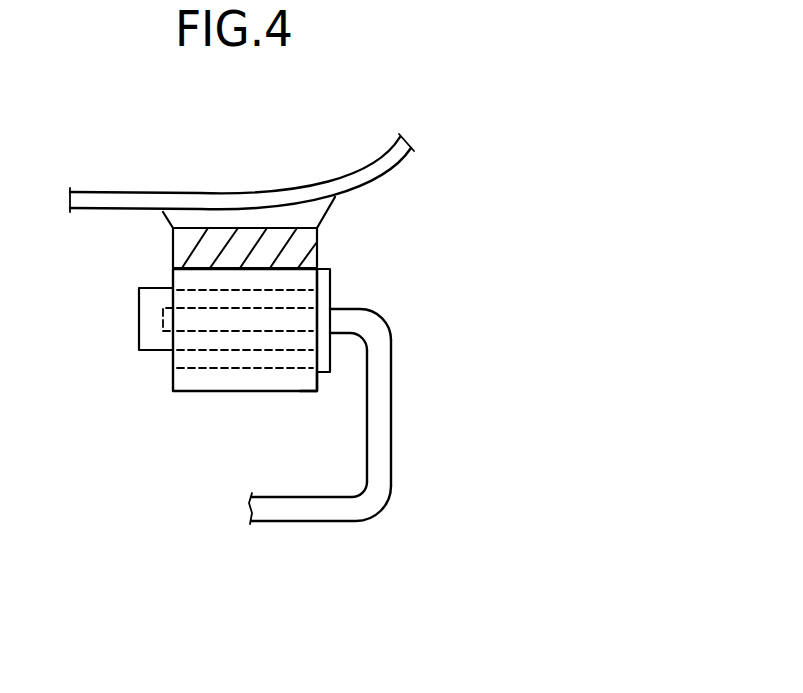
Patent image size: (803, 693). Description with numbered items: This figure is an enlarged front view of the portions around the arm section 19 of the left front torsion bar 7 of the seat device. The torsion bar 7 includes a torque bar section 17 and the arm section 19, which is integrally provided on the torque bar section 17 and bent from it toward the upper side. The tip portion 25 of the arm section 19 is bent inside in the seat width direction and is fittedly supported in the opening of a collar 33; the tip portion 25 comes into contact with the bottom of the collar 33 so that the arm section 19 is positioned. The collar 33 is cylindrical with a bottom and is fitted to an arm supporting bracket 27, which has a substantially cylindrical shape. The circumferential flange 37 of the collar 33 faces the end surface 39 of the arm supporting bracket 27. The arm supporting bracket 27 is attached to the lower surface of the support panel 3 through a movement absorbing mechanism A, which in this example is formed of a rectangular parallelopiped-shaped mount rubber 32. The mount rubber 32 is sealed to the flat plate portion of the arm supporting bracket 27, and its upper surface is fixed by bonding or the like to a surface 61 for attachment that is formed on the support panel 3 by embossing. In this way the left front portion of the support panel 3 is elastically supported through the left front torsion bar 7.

The support panel 3 is at (403, 163).
The left front torsion bar 7 is at (367, 443).
The torque bar section 17 is at (299, 523).
The arm section 19 is at (392, 437).
The tip portion 25 is at (350, 308).
The arm supporting bracket 27 is at (208, 392).
The mount rubber 32 is at (234, 232).
The collar 33 is at (152, 352).
The peripheral flange 37 is at (330, 273).
The end surface 39 is at (317, 380).
The surface for attachment 61 is at (180, 236).
The movement absorbing mechanism A is at (237, 336).